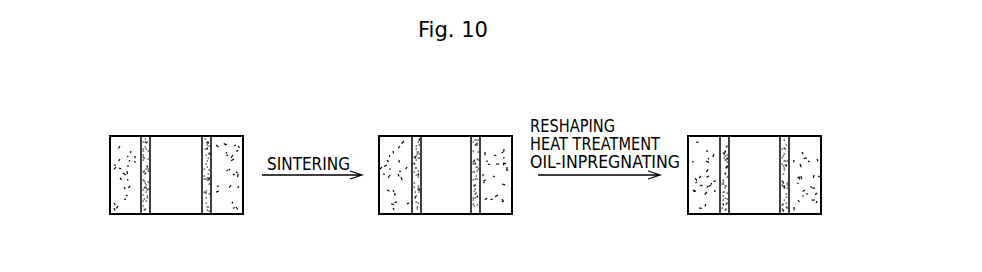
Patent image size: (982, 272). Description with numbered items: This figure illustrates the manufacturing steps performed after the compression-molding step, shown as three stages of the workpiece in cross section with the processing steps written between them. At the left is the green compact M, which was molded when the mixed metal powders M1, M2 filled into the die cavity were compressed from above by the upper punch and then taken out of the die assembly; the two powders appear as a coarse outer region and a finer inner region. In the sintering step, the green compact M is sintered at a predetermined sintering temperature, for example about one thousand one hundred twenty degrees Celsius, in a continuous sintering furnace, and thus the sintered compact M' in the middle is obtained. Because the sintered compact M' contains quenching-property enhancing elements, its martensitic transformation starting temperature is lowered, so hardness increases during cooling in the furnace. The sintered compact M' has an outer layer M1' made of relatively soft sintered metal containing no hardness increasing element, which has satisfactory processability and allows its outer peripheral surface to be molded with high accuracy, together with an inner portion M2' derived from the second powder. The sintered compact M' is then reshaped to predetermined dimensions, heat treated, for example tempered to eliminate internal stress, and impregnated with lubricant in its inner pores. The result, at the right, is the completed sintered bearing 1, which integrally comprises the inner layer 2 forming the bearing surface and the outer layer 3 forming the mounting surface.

The green compact M is at (183, 144).
The mixed metal powder M1 is at (153, 175).
The mixed metal powder M2 is at (176, 156).
The sintered compact M' is at (455, 143).
The outer layer M1' is at (444, 155).
The second sintered portion M2' is at (446, 155).
The sintered bearing 1 is at (795, 108).
The inner layer 2 is at (723, 155).
The outer layer 3 is at (705, 145).